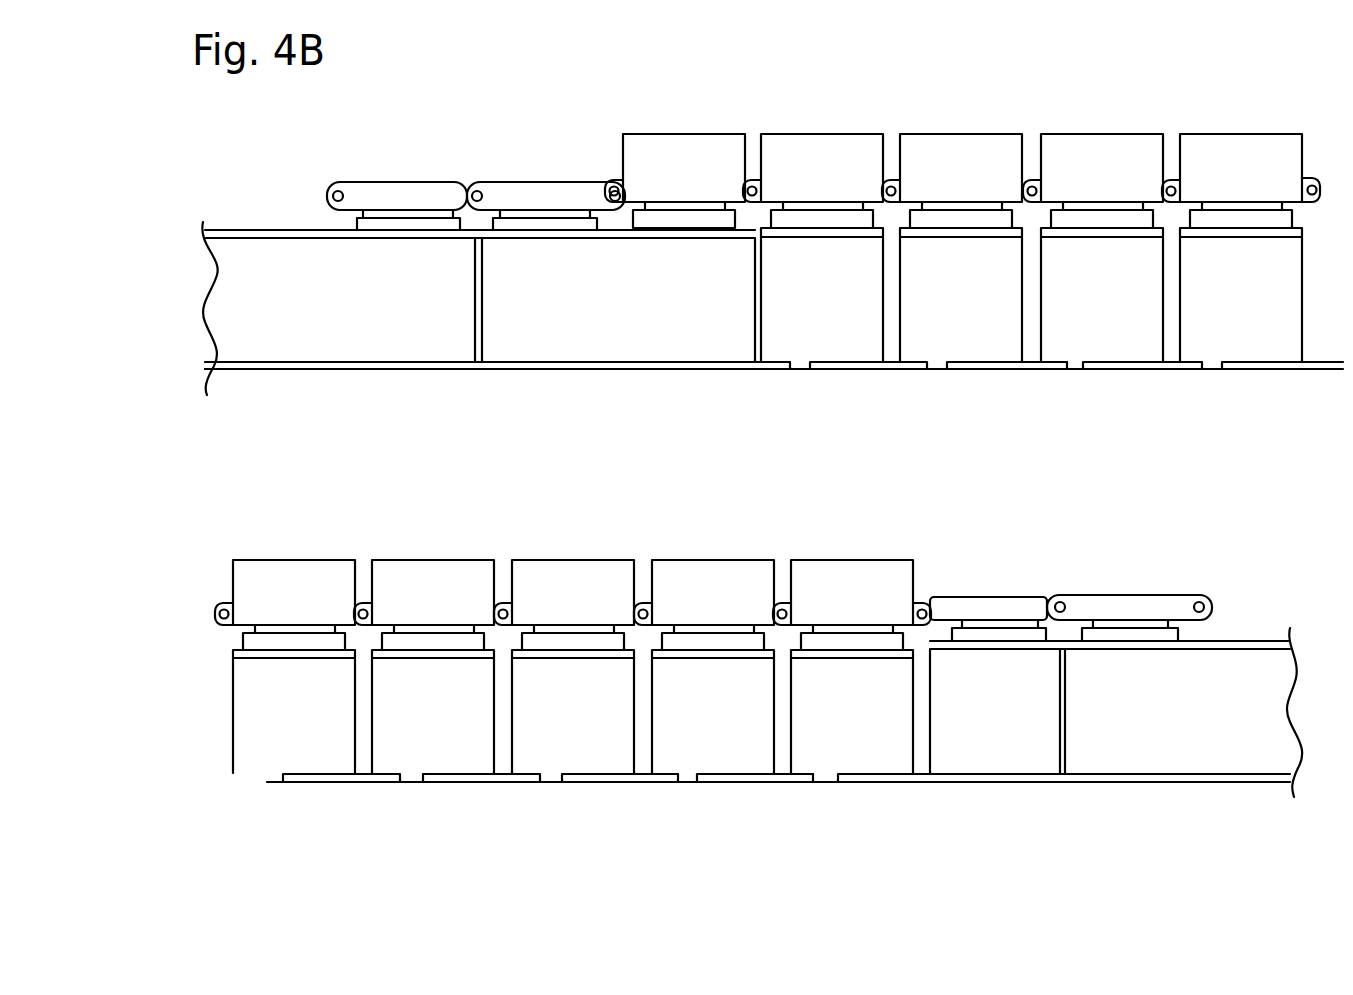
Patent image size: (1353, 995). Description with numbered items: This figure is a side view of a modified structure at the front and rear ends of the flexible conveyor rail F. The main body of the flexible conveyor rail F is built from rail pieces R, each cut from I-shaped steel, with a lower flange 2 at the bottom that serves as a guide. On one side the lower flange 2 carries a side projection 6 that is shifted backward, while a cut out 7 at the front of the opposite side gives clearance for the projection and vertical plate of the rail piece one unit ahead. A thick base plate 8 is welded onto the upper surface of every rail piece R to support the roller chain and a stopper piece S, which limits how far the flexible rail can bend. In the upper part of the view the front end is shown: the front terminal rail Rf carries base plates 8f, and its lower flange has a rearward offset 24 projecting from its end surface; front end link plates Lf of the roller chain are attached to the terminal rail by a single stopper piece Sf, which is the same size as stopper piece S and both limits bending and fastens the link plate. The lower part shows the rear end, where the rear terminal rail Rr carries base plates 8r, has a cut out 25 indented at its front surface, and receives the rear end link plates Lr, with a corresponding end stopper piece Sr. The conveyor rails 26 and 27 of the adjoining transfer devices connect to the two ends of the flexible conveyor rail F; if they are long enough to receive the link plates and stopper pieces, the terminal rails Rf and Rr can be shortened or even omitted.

The lower flange 2 is at (1123, 365).
The one side projection 6 is at (1328, 367).
The cut out 7 is at (1212, 365).
The base plate 8 is at (1233, 215).
The base plates 8f is at (683, 220).
The base plates 8r is at (1123, 637).
The rearward offset 24 is at (777, 370).
The cut out 25 is at (830, 778).
The conveyor rail 26 is at (268, 347).
The conveyor rail 27 is at (1237, 750).
The flexible conveyor rail F is at (750, 135).
The front end link plates Lf is at (517, 190).
The rear end link plates Lr is at (1120, 608).
The rail piece R is at (1083, 293).
The front terminal rail Rf is at (508, 293).
The rear terminal rail Rr is at (1022, 758).
The stopper piece S is at (1083, 145).
The stopper piece Sf is at (665, 147).
The rear slat Sr is at (878, 573).